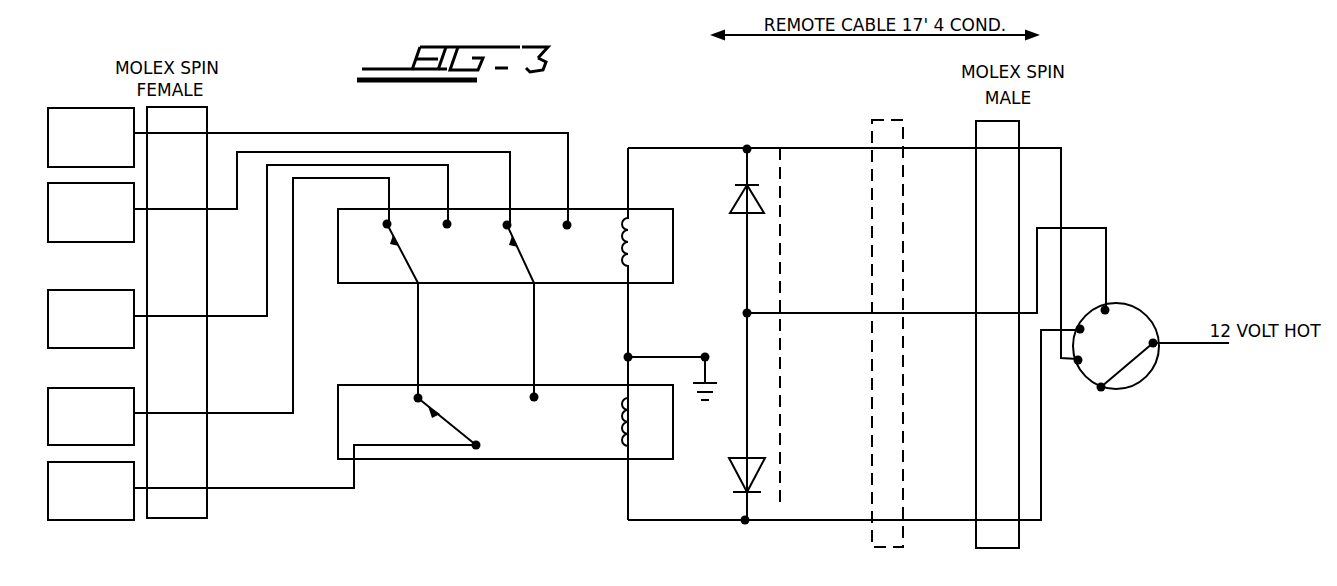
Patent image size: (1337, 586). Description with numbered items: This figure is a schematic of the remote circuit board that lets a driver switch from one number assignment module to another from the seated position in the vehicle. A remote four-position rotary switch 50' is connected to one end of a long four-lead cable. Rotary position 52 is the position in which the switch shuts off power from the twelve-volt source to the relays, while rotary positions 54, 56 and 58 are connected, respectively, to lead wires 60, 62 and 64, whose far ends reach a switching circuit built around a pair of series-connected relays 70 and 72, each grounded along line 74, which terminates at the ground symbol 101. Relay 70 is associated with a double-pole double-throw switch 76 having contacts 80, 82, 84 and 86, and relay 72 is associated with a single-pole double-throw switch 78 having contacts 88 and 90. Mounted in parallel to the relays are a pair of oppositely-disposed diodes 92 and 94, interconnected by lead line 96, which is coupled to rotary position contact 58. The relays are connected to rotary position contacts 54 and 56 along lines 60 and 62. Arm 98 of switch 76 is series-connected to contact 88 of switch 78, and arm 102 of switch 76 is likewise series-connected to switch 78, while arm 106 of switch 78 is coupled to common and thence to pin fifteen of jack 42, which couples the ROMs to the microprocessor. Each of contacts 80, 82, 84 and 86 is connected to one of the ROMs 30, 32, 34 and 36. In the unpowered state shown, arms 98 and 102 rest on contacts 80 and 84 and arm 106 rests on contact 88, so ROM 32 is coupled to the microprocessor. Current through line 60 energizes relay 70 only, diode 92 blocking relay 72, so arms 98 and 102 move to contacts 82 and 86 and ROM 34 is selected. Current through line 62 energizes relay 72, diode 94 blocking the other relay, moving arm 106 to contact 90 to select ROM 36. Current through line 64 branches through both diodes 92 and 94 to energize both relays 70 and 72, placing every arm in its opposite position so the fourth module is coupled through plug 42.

The ROM 30 is at (218, 311).
The ROM 32 is at (248, 256).
The ROM 34 is at (279, 197).
The ROM 36 is at (308, 166).
The jack 42 is at (262, 482).
The remote 4-position rotary switch 50' is at (1151, 333).
The rotary position 52 is at (1101, 390).
The rotary position 54 is at (1078, 362).
The rotary position 56 is at (1080, 327).
The rotary position 58 is at (1108, 308).
The lead wire 60 is at (1061, 192).
The lead wire 62 is at (1041, 490).
The lead wire 64 is at (1080, 228).
The relay 70 is at (623, 240).
The relay 72 is at (620, 432).
The line 74 is at (682, 355).
The switch 76 is at (460, 269).
The switch 78 is at (560, 458).
The contact 80 is at (395, 218).
The contact 82 is at (452, 217).
The contact 84 is at (512, 220).
The contact 86 is at (570, 220).
The contact 88 is at (415, 400).
The contact 90 is at (532, 402).
The diode 92 is at (735, 200).
The diode 94 is at (732, 472).
The lead line 96 is at (743, 272).
The arm 98 is at (402, 253).
The ground 101 is at (743, 427).
The arm 102 is at (527, 253).
The arm 106 is at (445, 425).